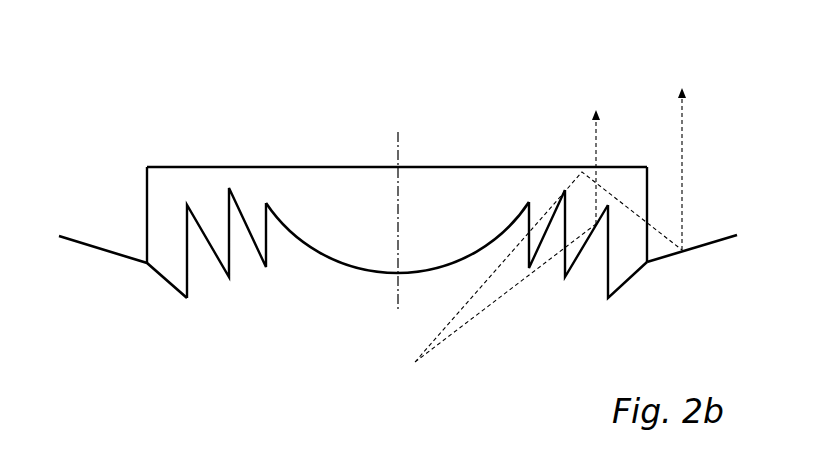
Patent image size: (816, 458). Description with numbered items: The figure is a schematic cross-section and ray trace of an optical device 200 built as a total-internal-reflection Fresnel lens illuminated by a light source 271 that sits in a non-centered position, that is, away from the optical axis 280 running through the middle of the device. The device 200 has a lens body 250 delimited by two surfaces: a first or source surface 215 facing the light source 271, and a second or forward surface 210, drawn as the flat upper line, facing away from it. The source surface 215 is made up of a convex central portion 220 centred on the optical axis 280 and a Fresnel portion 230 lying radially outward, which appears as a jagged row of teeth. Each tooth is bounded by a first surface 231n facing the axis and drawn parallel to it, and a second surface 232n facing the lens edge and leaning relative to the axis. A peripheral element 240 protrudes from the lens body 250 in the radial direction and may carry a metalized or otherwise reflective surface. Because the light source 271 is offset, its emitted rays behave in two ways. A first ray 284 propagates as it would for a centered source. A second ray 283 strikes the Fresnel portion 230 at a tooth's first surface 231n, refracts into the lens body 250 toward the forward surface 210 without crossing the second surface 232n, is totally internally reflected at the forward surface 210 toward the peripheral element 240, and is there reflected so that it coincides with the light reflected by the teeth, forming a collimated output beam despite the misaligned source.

The optical device 200 is at (213, 98).
The second surface (forward surface) 210 is at (210, 167).
The first surface (source surface) 215 is at (168, 285).
The central portion 220 is at (387, 273).
The Fresnel portion 230 is at (583, 283).
The first surface of a tooth 231n is at (528, 252).
The second surface of a tooth 232n is at (528, 252).
The peripheral element 240 is at (702, 253).
The lens body 250 is at (630, 177).
The light source 271 is at (415, 362).
The optical axis 280 is at (398, 155).
The second light ray 283 is at (683, 108).
The first light ray 284 is at (598, 128).